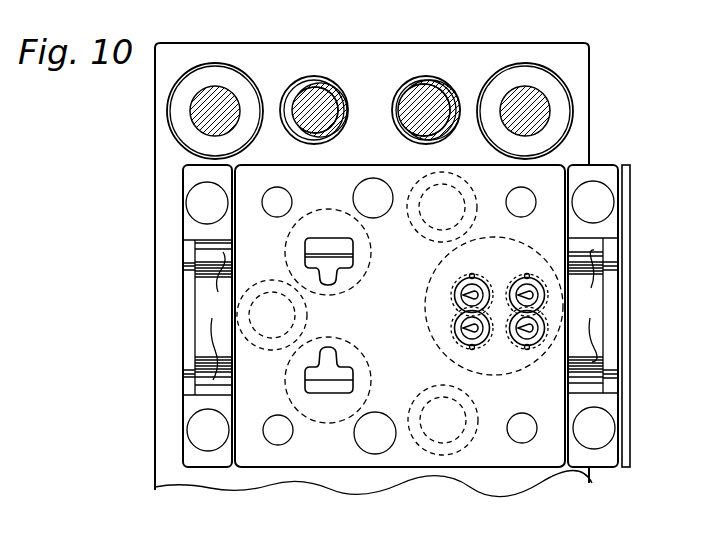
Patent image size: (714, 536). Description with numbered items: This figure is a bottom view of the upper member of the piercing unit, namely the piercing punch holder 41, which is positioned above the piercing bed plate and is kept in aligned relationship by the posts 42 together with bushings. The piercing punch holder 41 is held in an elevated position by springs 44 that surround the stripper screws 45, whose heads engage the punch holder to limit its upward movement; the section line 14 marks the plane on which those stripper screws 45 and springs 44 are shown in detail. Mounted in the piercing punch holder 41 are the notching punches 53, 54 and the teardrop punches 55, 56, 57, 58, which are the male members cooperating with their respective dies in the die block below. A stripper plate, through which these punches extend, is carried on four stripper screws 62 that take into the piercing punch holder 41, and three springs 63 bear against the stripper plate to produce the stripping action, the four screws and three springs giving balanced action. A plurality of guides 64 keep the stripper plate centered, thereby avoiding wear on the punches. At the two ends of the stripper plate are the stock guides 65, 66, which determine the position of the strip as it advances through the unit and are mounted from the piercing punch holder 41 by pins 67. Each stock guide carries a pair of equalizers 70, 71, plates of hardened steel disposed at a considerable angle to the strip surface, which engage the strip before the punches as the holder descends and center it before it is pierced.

The section line 14— 14 is at (315, 525).
The piercing punch holder 41 is at (580, 71).
The posts 42 is at (211, 90).
The springs 44 is at (422, 77).
The stripper screws 45 is at (303, 95).
The notching punch 53 is at (345, 372).
The notching punch 54 is at (344, 251).
The teardrop punch 55 is at (470, 331).
The teardrop punch 56 is at (472, 293).
The teardrop punch 57 is at (526, 331).
The teardrop punch 58 is at (526, 293).
The stripper screws 62 is at (281, 203).
The springs 63 is at (306, 314).
The guides 64 is at (378, 201).
The stock guide 65 is at (181, 278).
The stock guide 66 is at (624, 383).
The pins 67 is at (192, 203).
The equalizer 70 is at (213, 316).
The equalizer 71 is at (589, 306).